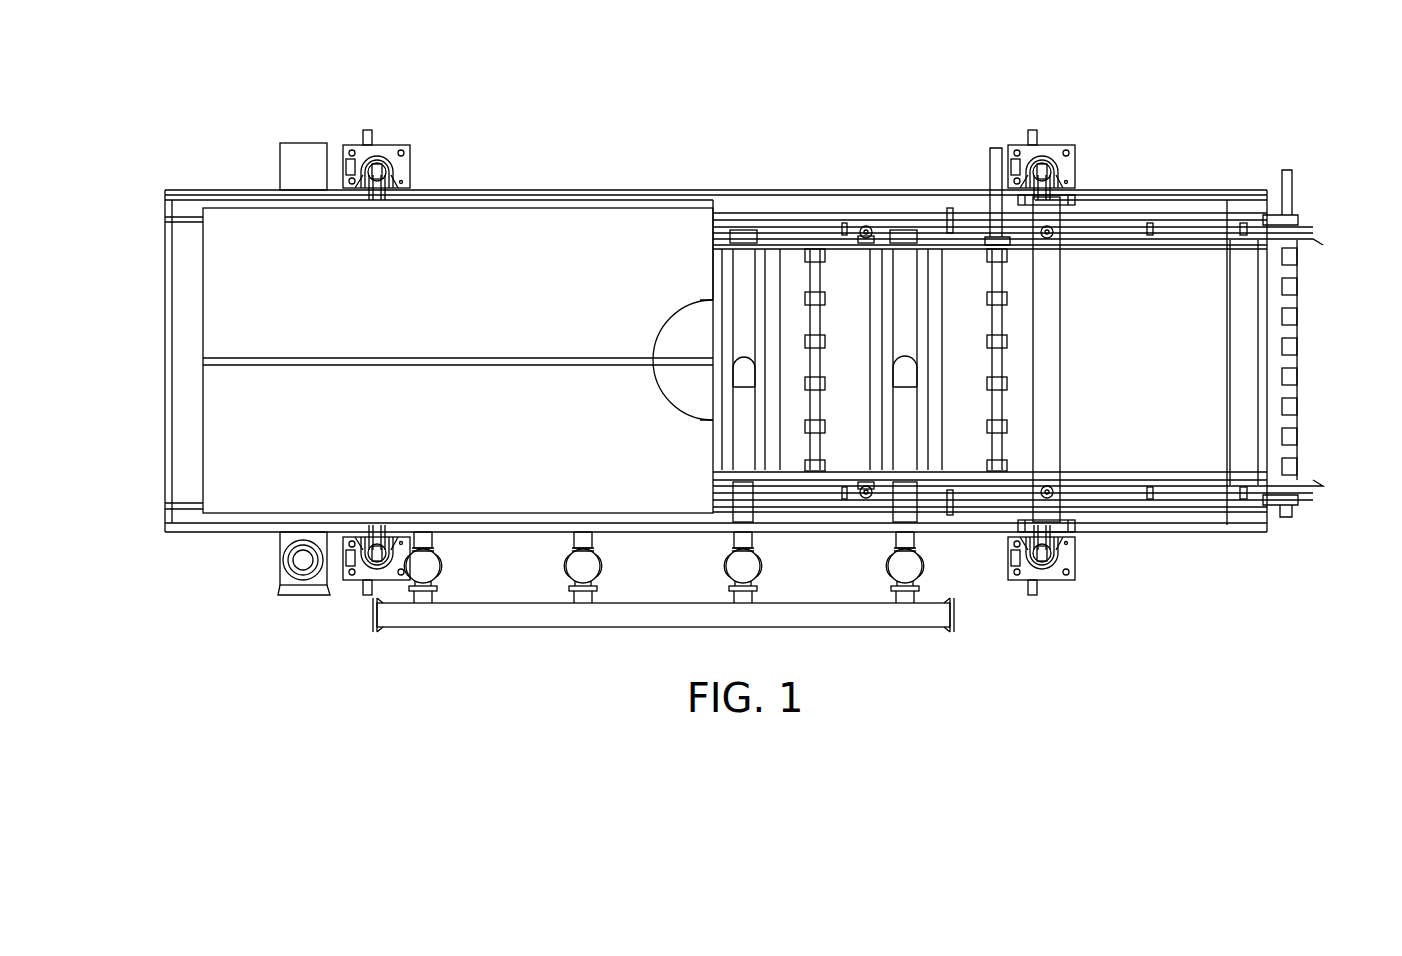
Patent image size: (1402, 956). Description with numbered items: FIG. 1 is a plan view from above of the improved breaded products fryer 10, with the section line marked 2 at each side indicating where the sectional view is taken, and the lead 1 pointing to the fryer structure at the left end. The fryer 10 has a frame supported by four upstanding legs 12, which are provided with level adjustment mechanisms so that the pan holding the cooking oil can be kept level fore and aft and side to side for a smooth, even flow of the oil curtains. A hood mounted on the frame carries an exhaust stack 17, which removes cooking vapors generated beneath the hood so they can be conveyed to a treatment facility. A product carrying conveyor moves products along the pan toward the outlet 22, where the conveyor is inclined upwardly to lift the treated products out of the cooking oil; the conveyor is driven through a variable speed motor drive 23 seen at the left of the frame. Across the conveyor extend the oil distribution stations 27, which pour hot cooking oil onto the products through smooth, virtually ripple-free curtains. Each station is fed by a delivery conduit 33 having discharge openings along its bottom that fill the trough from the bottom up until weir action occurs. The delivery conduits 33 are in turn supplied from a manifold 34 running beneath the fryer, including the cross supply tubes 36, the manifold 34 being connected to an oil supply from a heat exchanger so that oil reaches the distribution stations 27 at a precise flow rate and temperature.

The conveyor frame 1 is at (165, 420).
The section line 2 is at (88, 445).
The breaded products fryer 10 is at (812, 178).
The upstanding legs 12 is at (397, 145).
The exhaust stack 17 is at (685, 330).
The outlet 22 is at (1300, 360).
The variable speed motor drive 23 is at (305, 143).
The oil distribution stations 27 is at (905, 540).
The delivery conduit 33 is at (906, 260).
The manifold 34 is at (548, 628).
The cross supply tubes 36 is at (594, 598).